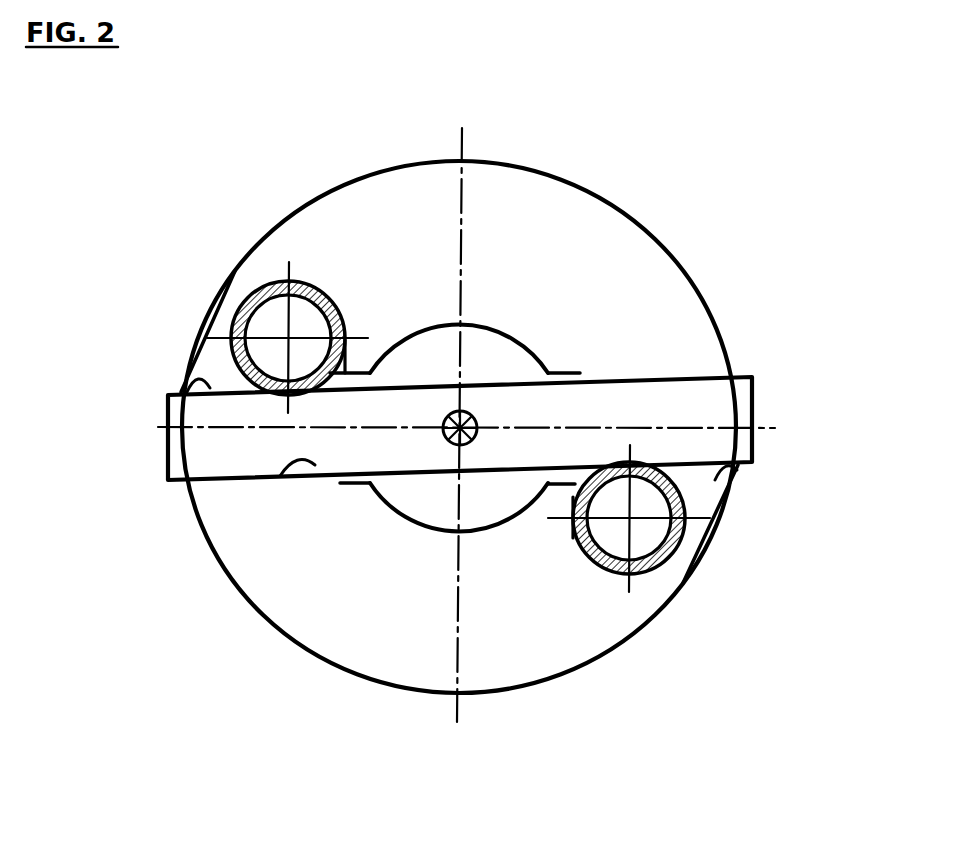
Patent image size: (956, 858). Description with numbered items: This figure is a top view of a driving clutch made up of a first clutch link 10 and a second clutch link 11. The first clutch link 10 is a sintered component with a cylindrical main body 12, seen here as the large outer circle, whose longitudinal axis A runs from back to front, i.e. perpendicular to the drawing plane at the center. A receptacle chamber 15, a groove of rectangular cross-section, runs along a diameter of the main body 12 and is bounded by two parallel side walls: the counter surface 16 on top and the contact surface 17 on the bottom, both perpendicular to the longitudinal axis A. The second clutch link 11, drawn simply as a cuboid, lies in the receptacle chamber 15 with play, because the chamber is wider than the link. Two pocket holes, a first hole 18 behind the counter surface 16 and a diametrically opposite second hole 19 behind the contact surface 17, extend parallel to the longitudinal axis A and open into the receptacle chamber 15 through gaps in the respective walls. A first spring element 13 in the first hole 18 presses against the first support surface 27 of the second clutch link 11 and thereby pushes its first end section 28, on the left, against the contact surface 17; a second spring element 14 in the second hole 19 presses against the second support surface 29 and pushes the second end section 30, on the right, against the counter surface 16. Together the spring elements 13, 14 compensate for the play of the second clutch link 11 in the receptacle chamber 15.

The first clutch link 10 is at (252, 246).
The second clutch link 11 is at (512, 388).
The main body 12 is at (553, 372).
The first spring element 13 is at (312, 283).
The second spring element 14 is at (605, 563).
The receptacle chamber 15 is at (168, 396).
The counter surface 16 is at (185, 392).
The contact surface 17 is at (292, 462).
The first hole 18 is at (346, 332).
The second hole 19 is at (572, 505).
The first support surface 27 is at (445, 379).
The first end section 28 is at (168, 478).
The second support surface 29 is at (440, 481).
The second end section 30 is at (752, 380).
The longitudinal axis A is at (478, 421).